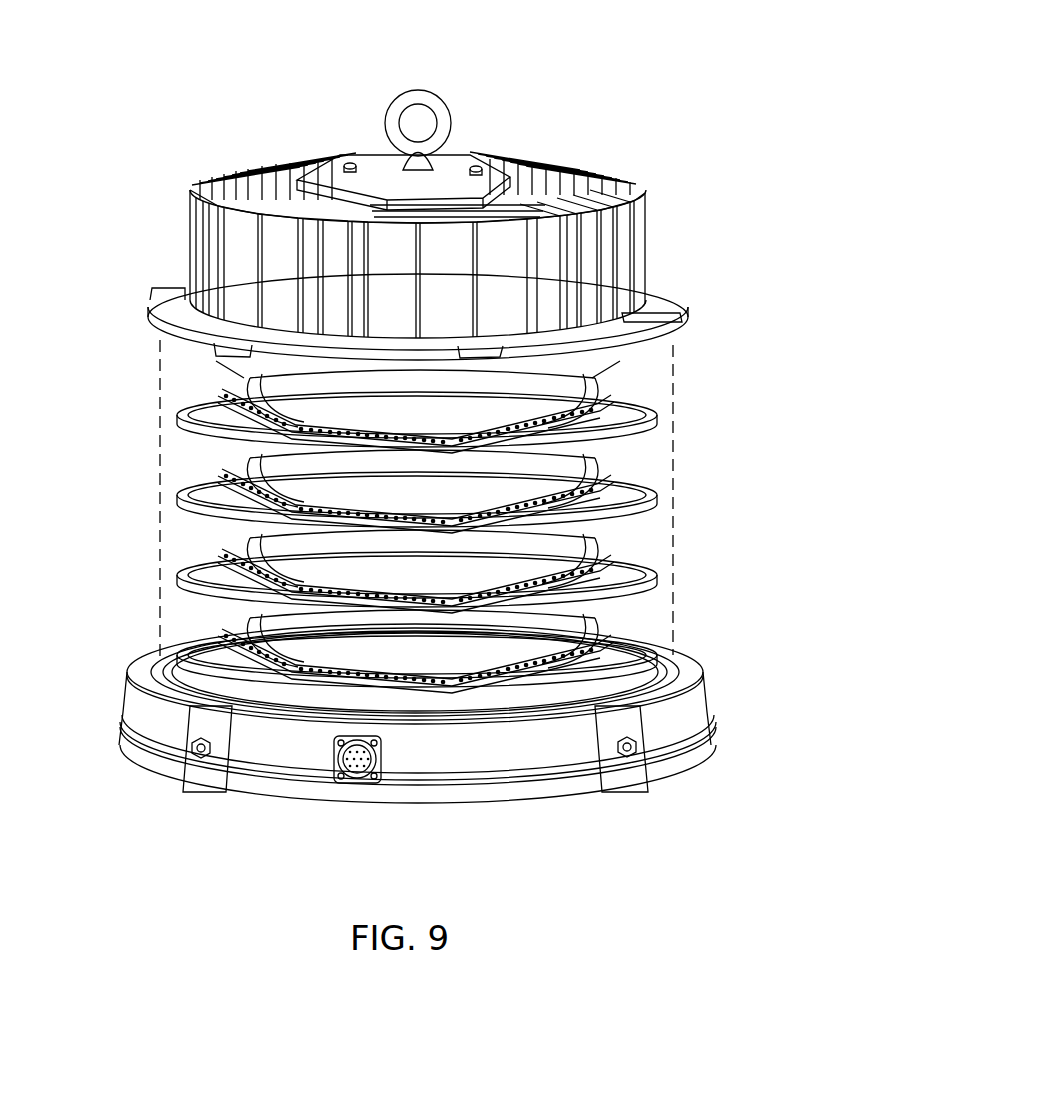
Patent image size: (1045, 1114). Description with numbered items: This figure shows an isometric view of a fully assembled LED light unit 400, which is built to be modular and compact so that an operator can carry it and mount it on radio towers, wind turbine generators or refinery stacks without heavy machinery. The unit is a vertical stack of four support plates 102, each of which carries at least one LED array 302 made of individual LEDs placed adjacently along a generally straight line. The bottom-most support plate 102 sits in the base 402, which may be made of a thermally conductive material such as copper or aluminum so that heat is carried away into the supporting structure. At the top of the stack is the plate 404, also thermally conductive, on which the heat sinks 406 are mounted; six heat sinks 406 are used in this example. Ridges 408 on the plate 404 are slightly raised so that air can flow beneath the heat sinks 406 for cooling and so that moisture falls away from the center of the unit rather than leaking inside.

The LED light unit 400 is at (583, 76).
The heat sink 406 is at (610, 163).
The plate 404 is at (663, 300).
The ridges 408 is at (675, 322).
The support plate 102 is at (633, 368).
The LED array 302 is at (218, 397).
The base 402 is at (688, 772).